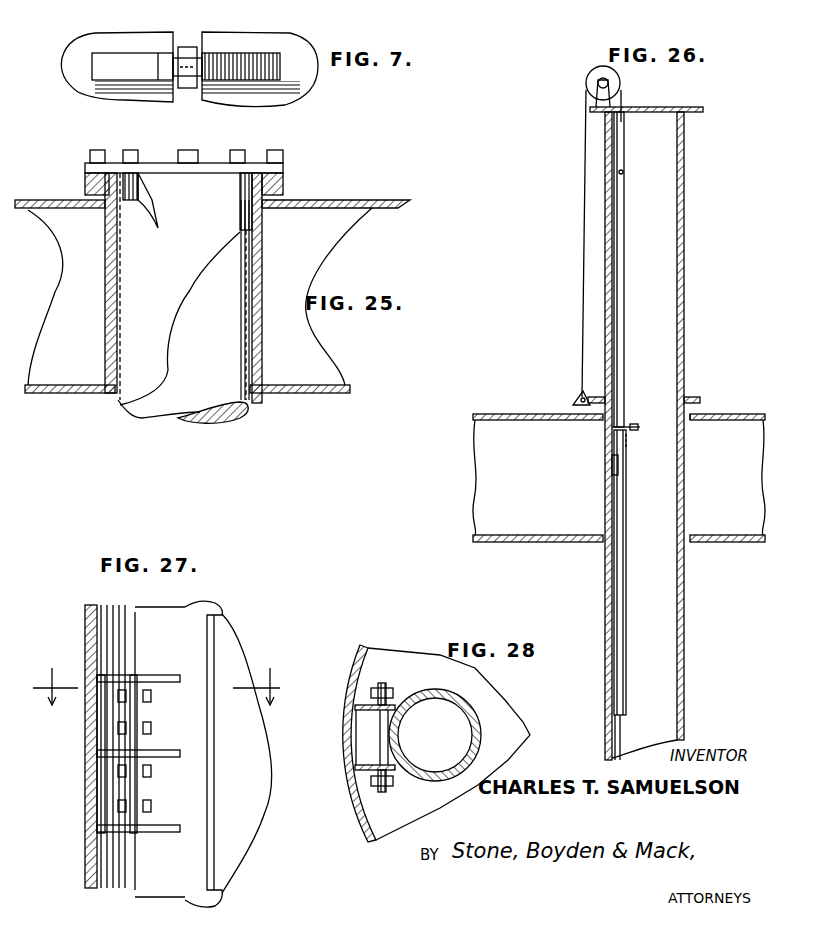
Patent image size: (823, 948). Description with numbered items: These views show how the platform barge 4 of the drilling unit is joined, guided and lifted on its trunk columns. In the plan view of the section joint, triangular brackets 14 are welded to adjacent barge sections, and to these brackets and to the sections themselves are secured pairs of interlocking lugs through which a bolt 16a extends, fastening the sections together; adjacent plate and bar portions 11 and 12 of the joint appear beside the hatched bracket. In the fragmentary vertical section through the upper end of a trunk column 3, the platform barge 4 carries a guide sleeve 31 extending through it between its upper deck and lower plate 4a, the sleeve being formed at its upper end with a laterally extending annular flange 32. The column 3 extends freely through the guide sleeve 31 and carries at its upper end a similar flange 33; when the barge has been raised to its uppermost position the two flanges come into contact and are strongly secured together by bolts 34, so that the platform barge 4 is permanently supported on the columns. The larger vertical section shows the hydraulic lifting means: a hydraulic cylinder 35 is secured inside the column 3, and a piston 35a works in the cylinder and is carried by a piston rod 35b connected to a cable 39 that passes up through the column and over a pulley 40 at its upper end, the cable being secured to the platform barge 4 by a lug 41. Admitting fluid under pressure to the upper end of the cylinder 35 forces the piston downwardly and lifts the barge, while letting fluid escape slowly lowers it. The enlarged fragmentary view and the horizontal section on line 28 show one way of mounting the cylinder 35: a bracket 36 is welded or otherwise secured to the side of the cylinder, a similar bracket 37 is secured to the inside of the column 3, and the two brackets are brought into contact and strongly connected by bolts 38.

In FIG. 25, the trunk column 3 is at (132, 416).
In FIG. 26, the trunk column 3 is at (686, 298).
In FIG. 27, the trunk column 3 is at (262, 838).
In FIG. 28, the trunk column 3 is at (360, 830).
In FIG. 25, the platform barge 4 is at (30, 200).
In FIG. 26, the platform barge 4 is at (512, 414).
In FIG. 25, the lower deck plate 4a is at (38, 386).
In FIG. 7, the hull plating 11 is at (248, 35).
In FIG. 7, the bar 12 is at (95, 38).
In FIG. 7, the triangular bracket 14 is at (258, 56).
In FIG. 7, the bolt 16a is at (190, 47).
In FIG. 27, the section line 28- 28 is at (157, 686).
In FIG. 25, the guide sleeve 31 is at (106, 322).
In FIG. 26, the guide sleeve 31 is at (695, 410).
In FIG. 25, the annular flange 32 is at (86, 180).
In FIG. 26, the annular flange 32 is at (700, 398).
In FIG. 25, the flange 33 is at (283, 172).
In FIG. 26, the flange 33 is at (703, 110).
In FIG. 25, the bolt 34 is at (268, 163).
In FIG. 26, the hydraulic cylinder 35 is at (626, 600).
In FIG. 28, the hydraulic cylinder 35 is at (462, 717).
In FIG. 26, the piston 35a is at (630, 440).
In FIG. 26, the piston rod 35b is at (625, 286).
In FIG. 27, the bracket 36 is at (158, 676).
In FIG. 28, the bracket 36 is at (385, 690).
In FIG. 26, the bracket 37 is at (620, 490).
In FIG. 27, the bracket 37 is at (100, 752).
In FIG. 28, the bracket 37 is at (375, 764).
In FIG. 27, the bolts 38 is at (150, 732).
In FIG. 28, the bolts 38 is at (395, 692).
In FIG. 26, the cable 39 is at (582, 236).
In FIG. 26, the pulley 40 is at (620, 82).
In FIG. 26, the lug 41 is at (575, 398).